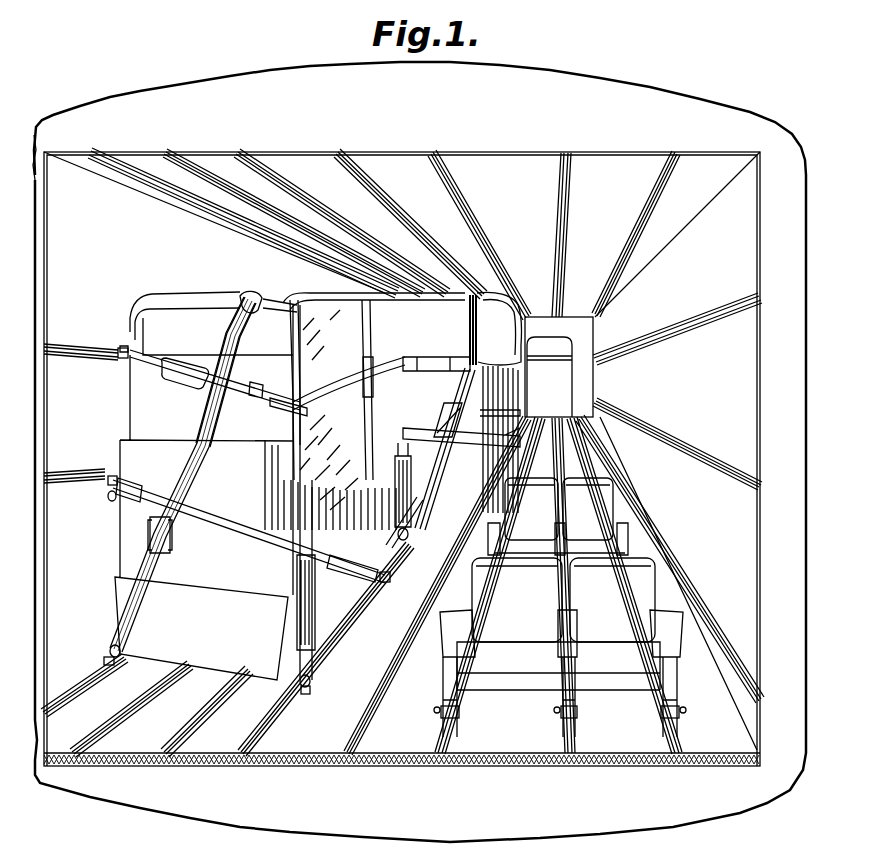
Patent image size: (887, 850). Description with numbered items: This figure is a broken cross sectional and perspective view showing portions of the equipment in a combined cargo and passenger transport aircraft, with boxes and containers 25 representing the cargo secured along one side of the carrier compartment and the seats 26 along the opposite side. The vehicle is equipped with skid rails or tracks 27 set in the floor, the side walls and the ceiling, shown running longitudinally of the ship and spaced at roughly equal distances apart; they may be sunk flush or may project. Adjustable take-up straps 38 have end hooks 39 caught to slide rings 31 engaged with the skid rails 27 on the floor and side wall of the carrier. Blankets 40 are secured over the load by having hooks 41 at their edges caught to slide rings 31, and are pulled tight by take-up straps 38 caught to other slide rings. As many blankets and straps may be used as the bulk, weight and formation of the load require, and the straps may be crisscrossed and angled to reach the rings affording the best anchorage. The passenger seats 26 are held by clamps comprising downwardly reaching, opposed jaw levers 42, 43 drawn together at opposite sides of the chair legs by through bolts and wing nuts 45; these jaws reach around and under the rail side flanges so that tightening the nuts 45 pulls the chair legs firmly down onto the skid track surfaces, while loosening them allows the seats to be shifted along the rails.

The boxes and containers 25 is at (147, 458).
The seats 26 is at (600, 515).
The skid rails or tracks 27 is at (447, 187).
The slide rings 31 is at (116, 360).
The adjustable take-up straps 38 is at (205, 476).
The end hooks 39 is at (111, 501).
The blankets 40 is at (210, 300).
The hooks 41 is at (120, 346).
The jaw lever 42 is at (577, 716).
The jaw lever 43 is at (680, 705).
The wing nuts 45 is at (686, 714).